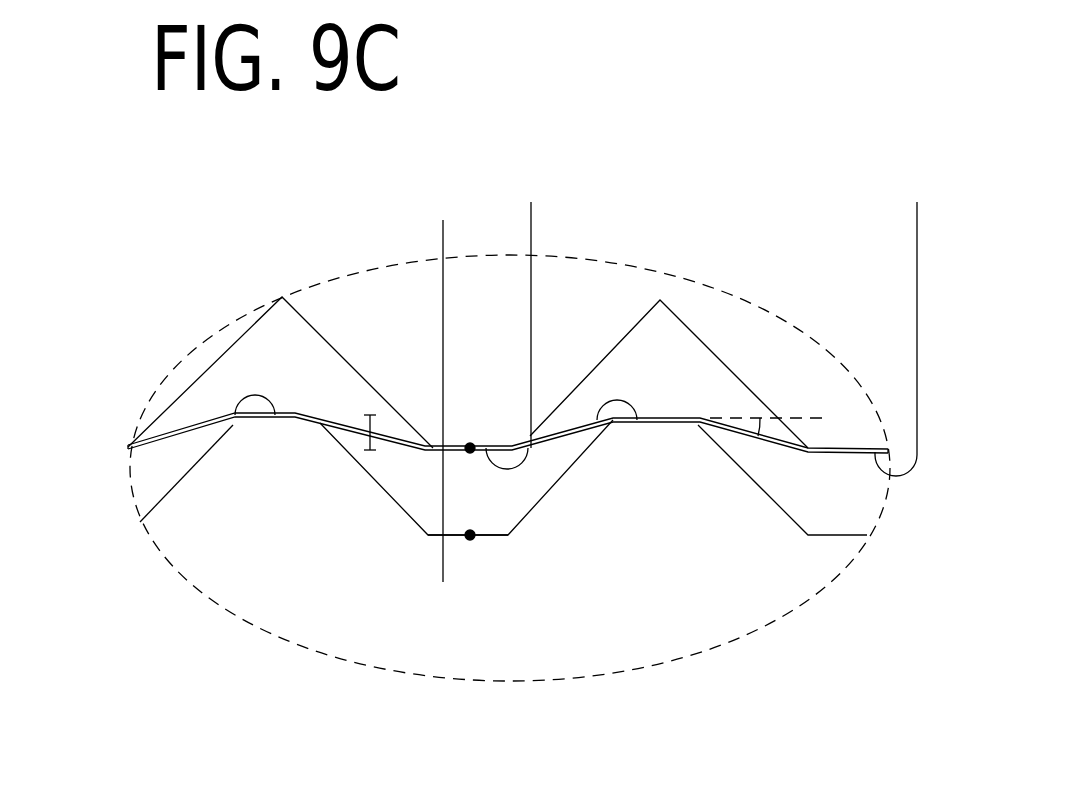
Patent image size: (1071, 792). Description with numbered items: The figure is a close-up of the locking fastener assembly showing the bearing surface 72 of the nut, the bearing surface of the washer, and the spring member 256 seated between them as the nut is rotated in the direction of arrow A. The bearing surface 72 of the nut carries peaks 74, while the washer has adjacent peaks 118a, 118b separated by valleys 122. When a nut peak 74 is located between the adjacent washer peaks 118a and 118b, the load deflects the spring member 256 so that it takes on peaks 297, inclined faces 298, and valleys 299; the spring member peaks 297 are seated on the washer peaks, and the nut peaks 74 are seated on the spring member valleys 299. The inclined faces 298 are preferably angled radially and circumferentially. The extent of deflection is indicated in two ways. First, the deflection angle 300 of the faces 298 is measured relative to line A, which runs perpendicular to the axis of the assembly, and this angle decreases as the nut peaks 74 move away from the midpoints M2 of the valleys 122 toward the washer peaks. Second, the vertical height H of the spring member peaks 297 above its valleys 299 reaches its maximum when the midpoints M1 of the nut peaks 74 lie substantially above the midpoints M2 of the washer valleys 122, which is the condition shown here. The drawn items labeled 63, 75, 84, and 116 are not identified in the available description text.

The inclined wall 63 is at (210, 362).
The bearing surface 72 is at (238, 333).
The peaks 74 is at (724, 324).
The apex 75 is at (282, 297).
The downwardly extending wall 84 is at (382, 487).
The planar panel 116 is at (162, 495).
The peak 118a is at (233, 423).
The peak 118b is at (600, 432).
The valleys 122 is at (461, 577).
The spring member 256 is at (197, 440).
The peaks 297 is at (293, 415).
The inclined faces 298 is at (167, 433).
The valleys 299 is at (840, 497).
The deflection angle 300 is at (770, 440).
The line A / arrow A is at (450, 300).
The vertical height H is at (378, 425).
The midpoints of the peaks M1 is at (472, 433).
The midpoints of the valleys M2 is at (473, 538).